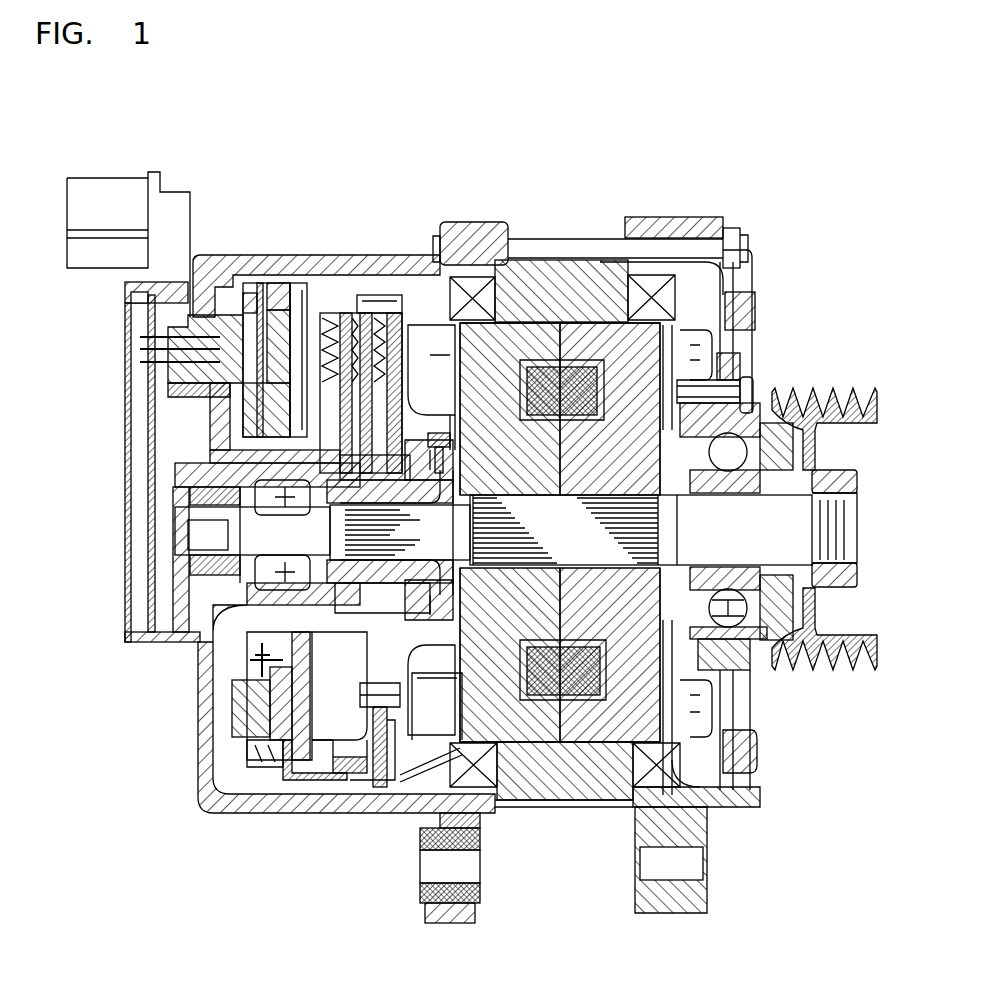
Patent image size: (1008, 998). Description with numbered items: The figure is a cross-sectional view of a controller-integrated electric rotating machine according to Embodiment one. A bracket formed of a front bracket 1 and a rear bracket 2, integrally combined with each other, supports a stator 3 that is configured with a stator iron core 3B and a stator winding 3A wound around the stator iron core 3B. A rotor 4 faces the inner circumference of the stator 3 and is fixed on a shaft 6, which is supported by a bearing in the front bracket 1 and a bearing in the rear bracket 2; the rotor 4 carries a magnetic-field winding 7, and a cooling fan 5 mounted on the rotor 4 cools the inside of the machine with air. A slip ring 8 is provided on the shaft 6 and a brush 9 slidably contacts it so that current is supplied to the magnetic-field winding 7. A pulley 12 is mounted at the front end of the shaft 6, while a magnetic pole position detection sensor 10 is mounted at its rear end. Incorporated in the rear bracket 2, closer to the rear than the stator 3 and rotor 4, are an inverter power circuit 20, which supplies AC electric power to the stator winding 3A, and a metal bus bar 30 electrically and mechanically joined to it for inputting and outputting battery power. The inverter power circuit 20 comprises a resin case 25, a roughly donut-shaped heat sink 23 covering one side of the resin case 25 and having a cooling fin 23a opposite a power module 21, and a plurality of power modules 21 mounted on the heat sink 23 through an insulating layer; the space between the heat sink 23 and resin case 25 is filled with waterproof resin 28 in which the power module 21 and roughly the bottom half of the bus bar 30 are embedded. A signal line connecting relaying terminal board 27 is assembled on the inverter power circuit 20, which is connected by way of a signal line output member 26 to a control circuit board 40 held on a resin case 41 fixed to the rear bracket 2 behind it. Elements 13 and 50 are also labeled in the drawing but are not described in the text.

The front bracket 1 is at (737, 313).
The rear bracket 2 is at (422, 262).
The stator 3 is at (575, 920).
The stator winding 3A is at (480, 775).
The stator iron core 3B is at (565, 797).
The rotor 4 is at (613, 397).
The cooling fan 5 is at (443, 318).
The shaft 6 is at (705, 535).
The magnetic-field winding 7 is at (563, 367).
The slip ring 8 is at (378, 465).
The brush 9 is at (330, 313).
The magnetic pole position detection sensor 10 is at (187, 500).
The pulley 12 is at (810, 400).
The front bearing 13 is at (725, 530).
The inverter power circuit 20 is at (266, 290).
The power module 21 is at (277, 723).
The heat sink 23 is at (330, 780).
The cooling fin 23a is at (340, 780).
The resin case 25 is at (300, 780).
The signal line output member 26 is at (232, 318).
The signal line connecting relaying terminal board 27 is at (260, 668).
The waterproof resin 28 is at (257, 748).
The bus bar 30 is at (247, 697).
The control circuit board 40 is at (150, 413).
The resin case 41 is at (142, 290).
The lead bracket 50 is at (365, 780).